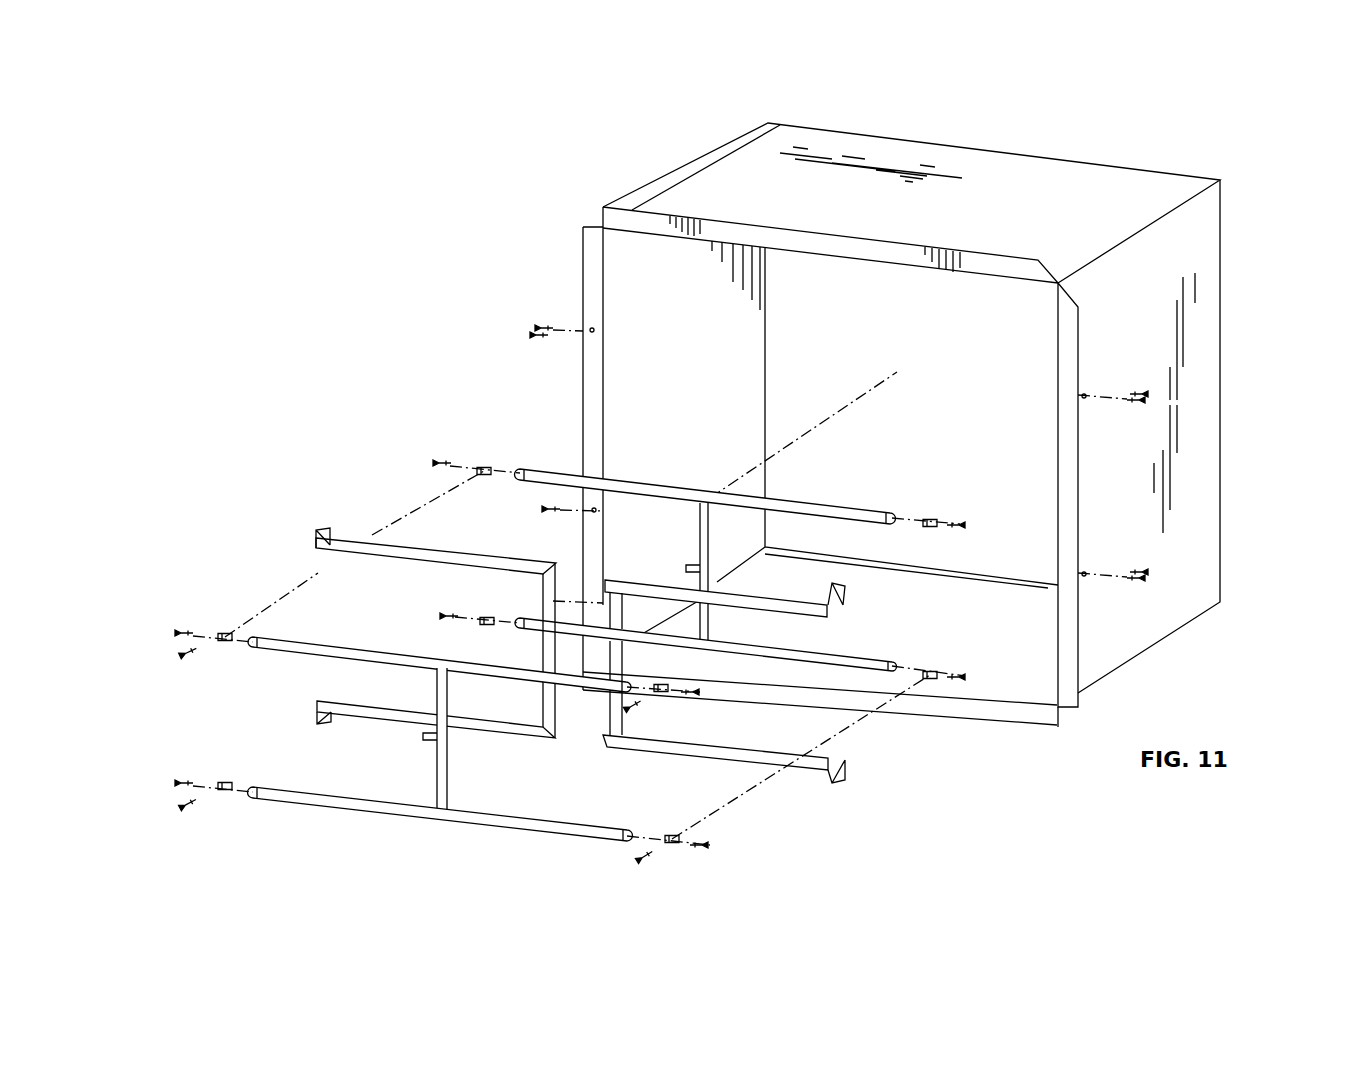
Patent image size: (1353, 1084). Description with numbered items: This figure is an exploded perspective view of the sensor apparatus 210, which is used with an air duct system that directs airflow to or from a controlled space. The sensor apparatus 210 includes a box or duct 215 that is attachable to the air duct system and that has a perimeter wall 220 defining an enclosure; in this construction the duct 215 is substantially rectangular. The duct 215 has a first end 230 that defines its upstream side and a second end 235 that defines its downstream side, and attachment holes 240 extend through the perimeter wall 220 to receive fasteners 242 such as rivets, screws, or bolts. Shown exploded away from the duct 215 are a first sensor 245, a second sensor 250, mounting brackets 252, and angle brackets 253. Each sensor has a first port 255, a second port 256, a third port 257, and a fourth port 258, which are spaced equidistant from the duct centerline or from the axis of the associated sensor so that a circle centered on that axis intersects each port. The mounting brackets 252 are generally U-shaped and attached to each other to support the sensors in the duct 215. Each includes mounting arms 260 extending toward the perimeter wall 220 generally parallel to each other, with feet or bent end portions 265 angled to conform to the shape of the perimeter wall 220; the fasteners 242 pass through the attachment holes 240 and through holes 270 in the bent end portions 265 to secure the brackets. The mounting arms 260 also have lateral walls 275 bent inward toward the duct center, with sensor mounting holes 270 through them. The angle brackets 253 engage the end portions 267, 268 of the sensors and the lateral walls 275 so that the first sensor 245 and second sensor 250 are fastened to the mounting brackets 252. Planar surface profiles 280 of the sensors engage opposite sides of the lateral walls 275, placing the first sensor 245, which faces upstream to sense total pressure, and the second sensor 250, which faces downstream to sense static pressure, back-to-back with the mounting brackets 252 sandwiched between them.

The sensor apparatus 210 is at (527, 147).
The duct 215 is at (688, 172).
The perimeter wall 220 is at (1205, 237).
The first end 230 is at (588, 252).
The second end 235 is at (1028, 152).
The attachment holes 240 is at (630, 342).
The fasteners 242 is at (547, 327).
The first sensor 245 is at (445, 820).
The second sensor 250 is at (790, 500).
The mounting brackets 252 is at (628, 705).
The angle brackets 253 is at (488, 467).
The first port 255 is at (442, 463).
The second port 256 is at (365, 660).
The third port 257 is at (440, 831).
The fourth port 258 is at (365, 815).
The mounting arms 260 is at (440, 548).
The bent end portions 265 is at (325, 533).
The end portion 267 is at (523, 470).
The end portion 268 is at (526, 628).
The holes 270 is at (331, 530).
The lateral walls 275 is at (358, 553).
The planar surface profiles 280 is at (704, 503).